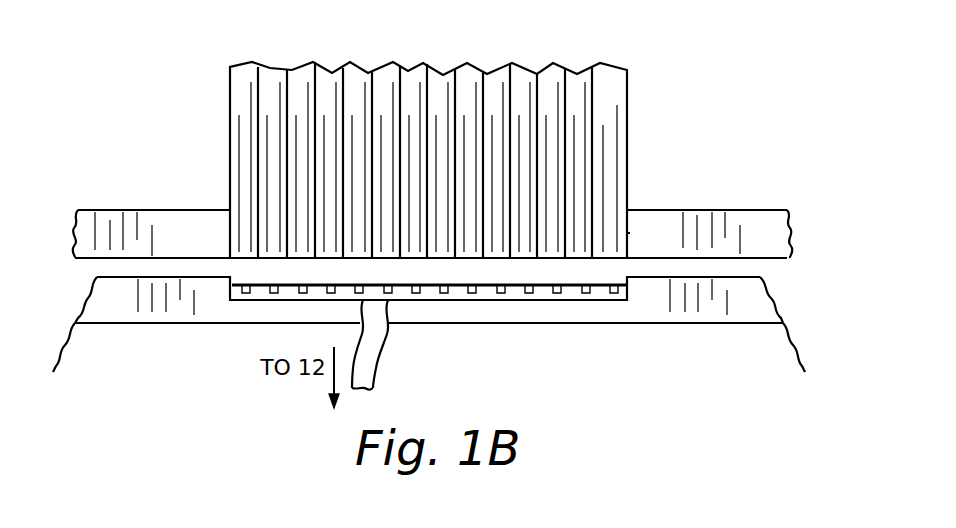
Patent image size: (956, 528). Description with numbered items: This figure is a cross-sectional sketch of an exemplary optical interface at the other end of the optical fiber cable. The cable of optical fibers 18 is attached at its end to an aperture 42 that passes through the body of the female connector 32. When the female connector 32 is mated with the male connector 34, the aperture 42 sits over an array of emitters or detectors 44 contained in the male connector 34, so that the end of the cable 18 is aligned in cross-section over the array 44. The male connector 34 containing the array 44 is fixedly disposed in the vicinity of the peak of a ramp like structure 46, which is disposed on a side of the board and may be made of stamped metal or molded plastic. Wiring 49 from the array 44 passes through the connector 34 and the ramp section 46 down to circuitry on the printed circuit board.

The cable of optical fibers 18 is at (229, 155).
The female connector 32 is at (760, 209).
The male connector 34 is at (768, 302).
The aperture 42 is at (628, 233).
The array of emitters or detectors 44 is at (628, 294).
The ramp like structure 46 is at (115, 368).
The wiring 49 is at (390, 345).